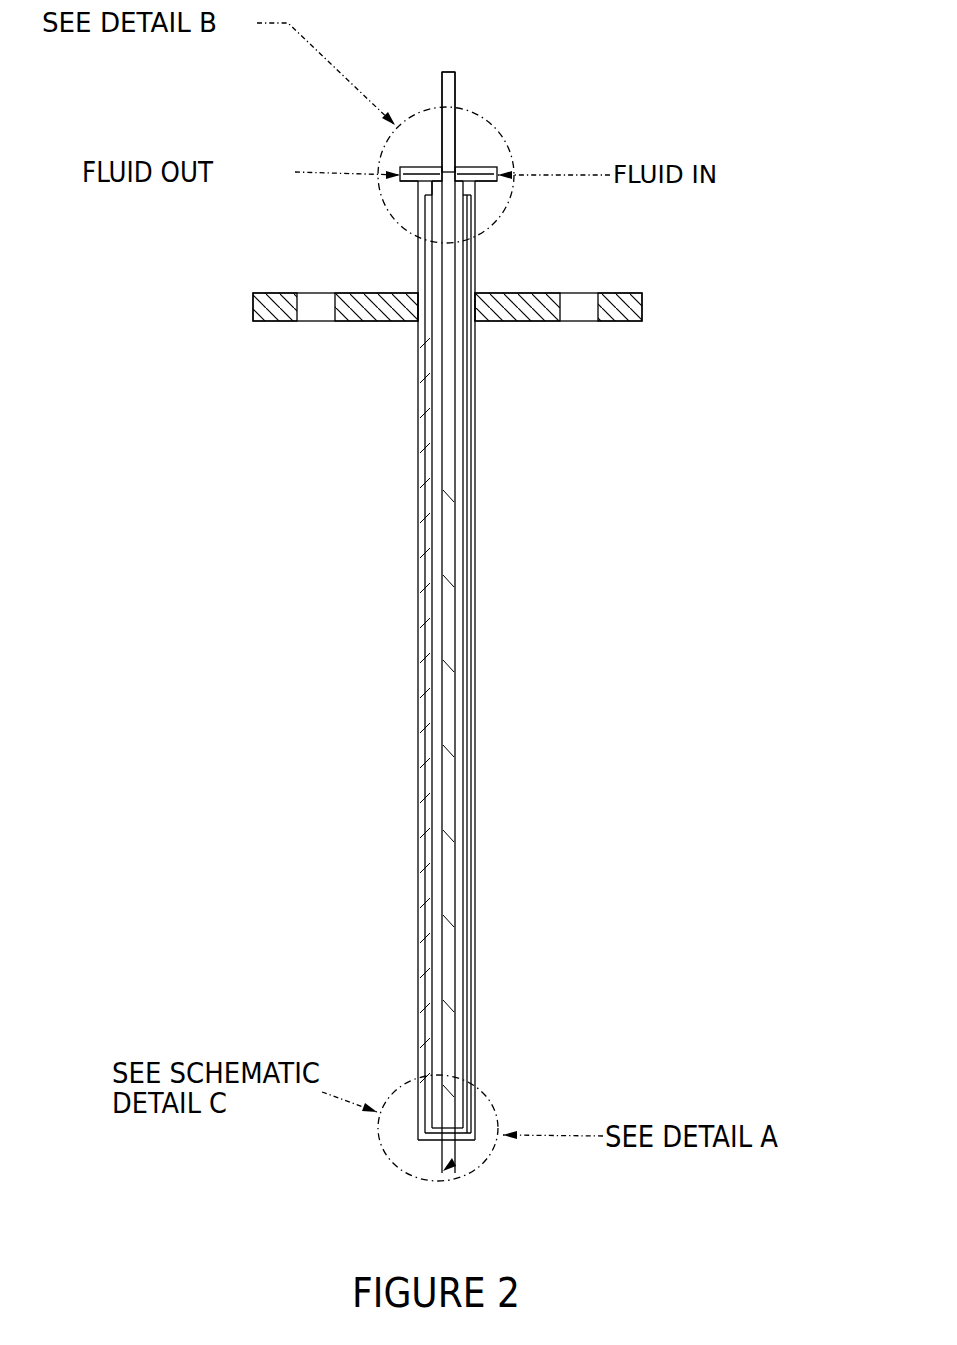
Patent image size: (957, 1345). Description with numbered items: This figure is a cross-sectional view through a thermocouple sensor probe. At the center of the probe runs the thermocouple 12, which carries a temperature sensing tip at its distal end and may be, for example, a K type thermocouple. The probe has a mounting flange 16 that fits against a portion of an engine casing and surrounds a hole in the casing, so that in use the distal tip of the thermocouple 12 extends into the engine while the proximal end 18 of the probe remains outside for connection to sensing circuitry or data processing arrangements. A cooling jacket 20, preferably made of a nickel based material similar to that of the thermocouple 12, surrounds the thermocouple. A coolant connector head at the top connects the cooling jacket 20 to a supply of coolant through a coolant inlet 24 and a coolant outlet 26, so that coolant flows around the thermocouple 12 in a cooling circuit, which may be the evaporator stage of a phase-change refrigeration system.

The thermocouple 12 is at (559, 622).
The mounting flange 16 is at (514, 339).
The proximal end 18 is at (572, 97).
The cooling jacket 20 is at (545, 660).
The coolant inlet 24 is at (544, 211).
The coolant outlet 26 is at (347, 209).